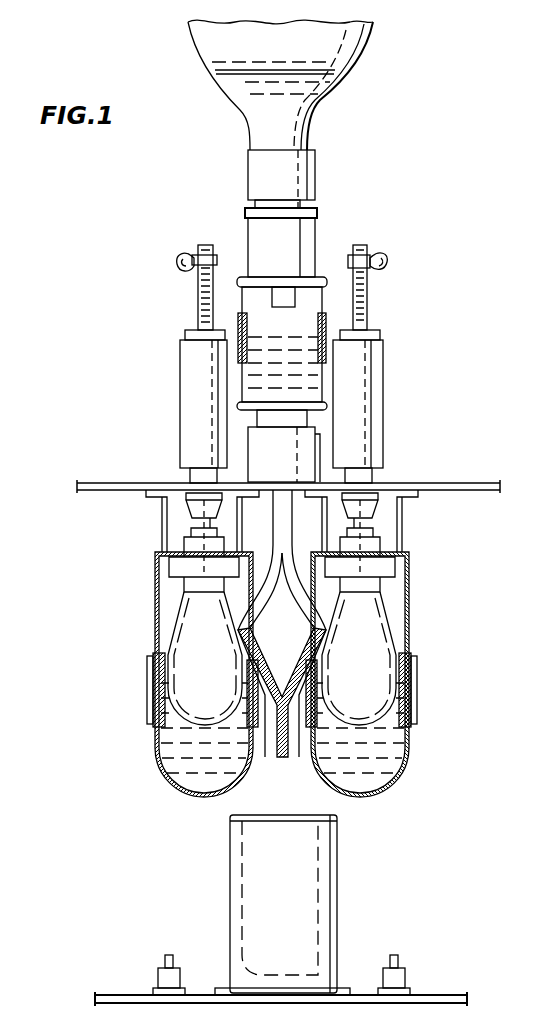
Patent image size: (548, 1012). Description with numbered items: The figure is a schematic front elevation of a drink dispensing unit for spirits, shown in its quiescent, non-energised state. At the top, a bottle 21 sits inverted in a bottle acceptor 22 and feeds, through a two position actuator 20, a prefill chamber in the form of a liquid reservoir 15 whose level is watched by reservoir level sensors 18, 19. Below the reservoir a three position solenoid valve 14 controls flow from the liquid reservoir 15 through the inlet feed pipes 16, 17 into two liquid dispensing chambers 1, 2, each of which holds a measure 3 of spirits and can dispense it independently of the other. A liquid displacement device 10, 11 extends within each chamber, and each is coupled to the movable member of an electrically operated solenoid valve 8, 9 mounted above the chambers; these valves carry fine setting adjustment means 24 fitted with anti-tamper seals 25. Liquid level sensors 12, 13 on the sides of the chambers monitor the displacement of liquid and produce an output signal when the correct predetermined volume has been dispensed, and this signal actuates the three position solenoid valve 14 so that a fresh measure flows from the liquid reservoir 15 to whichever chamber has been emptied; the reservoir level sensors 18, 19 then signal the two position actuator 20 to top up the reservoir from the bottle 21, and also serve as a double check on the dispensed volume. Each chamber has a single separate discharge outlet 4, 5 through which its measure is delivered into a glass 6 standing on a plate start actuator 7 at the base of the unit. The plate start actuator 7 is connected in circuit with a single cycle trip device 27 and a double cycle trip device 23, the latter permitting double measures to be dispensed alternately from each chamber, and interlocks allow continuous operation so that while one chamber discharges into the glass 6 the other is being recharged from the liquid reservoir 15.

The liquid dispensing chamber 1 is at (156, 606).
The liquid dispensing chamber 2 is at (407, 604).
The measure 3 is at (188, 771).
The discharge outlet 4 is at (270, 757).
The discharge outlet 5 is at (292, 757).
The glass 6 is at (251, 890).
The plate start actuator 7 is at (340, 994).
The solenoid valve 8 is at (196, 403).
The solenoid valve 9 is at (360, 412).
The liquid displacement device 10 is at (188, 700).
The liquid displacement device 11 is at (376, 700).
The liquid level sensor 12 is at (153, 676).
The liquid level sensor 13 is at (417, 676).
The three position solenoid valve 14 is at (266, 453).
The liquid reservoir 15 is at (320, 372).
The inlet feed pipe 16 is at (258, 606).
The inlet feed pipe 17 is at (305, 597).
The reservoir level sensor 18 is at (238, 324).
The reservoir level sensor 19 is at (327, 320).
The two position actuator 20 is at (304, 232).
The bottle 21 is at (300, 124).
The bottle acceptor 22 is at (262, 183).
The double cycle trip device 23 is at (397, 976).
The fine setting adjustment means 24 is at (207, 258).
The anti-tamper seal 25 is at (183, 255).
The single cycle trip device 27 is at (165, 976).